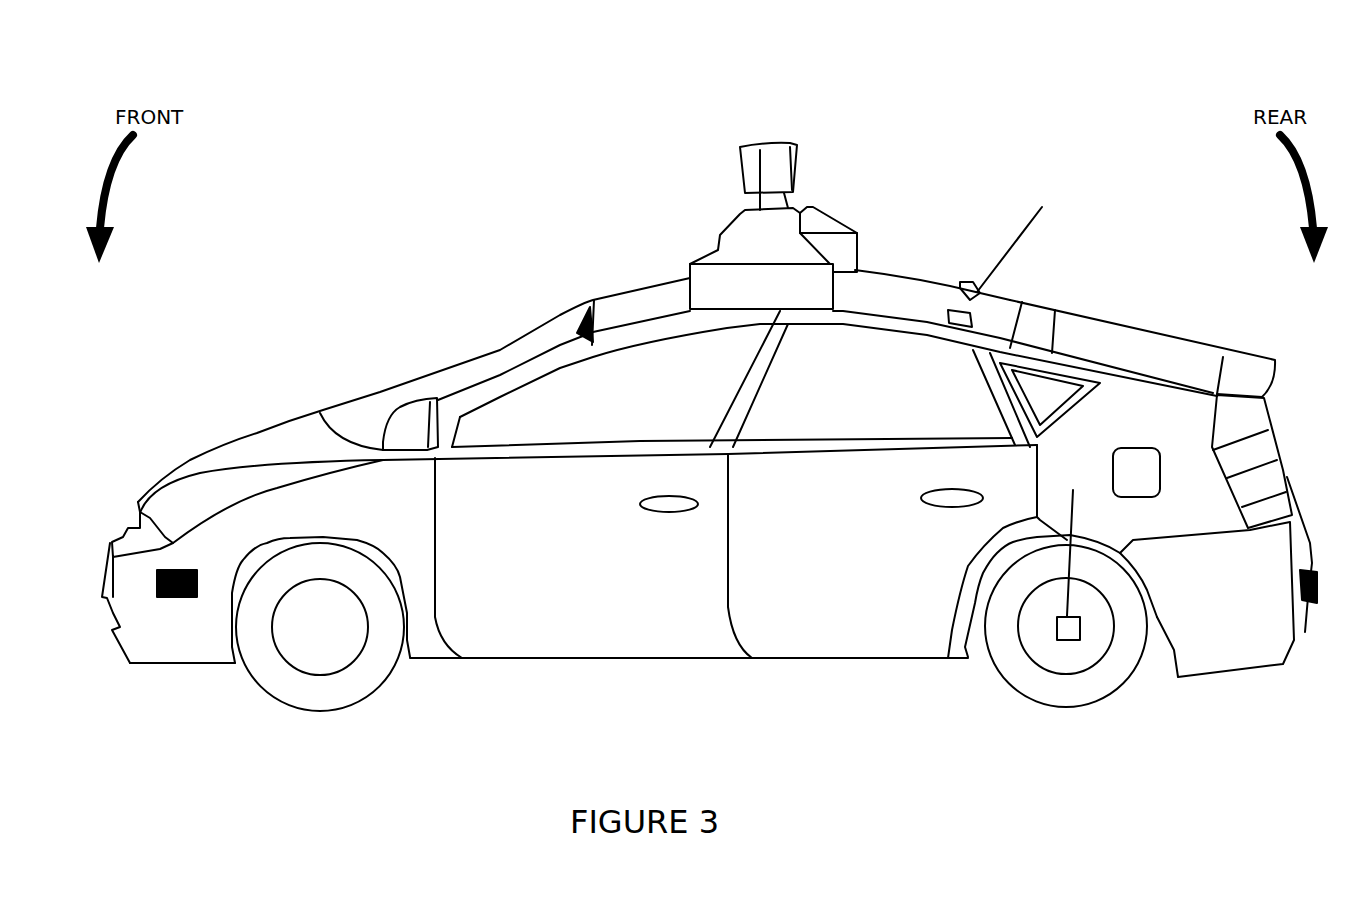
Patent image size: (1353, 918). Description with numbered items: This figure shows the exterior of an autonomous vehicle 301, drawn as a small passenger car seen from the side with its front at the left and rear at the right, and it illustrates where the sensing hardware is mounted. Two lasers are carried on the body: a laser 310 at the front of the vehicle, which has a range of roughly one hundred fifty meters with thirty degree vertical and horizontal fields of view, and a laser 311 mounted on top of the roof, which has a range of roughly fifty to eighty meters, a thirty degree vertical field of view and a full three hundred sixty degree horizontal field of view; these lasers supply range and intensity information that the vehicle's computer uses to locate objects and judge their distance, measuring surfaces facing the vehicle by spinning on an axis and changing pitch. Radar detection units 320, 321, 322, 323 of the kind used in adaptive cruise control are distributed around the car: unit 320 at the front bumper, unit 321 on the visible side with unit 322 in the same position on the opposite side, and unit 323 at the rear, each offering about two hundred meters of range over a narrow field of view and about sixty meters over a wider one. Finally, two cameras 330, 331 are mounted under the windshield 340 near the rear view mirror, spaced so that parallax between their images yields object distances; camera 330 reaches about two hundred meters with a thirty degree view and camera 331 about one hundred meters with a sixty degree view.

The vehicle 301 is at (384, 91).
The laser 310 is at (110, 553).
The laser 311 is at (747, 162).
The radar detection unit 320 is at (112, 617).
The radar detection unit 321 is at (178, 597).
The radar detection unit 322 is at (427, 656).
The radar detection unit 323 is at (1312, 603).
The camera 330 is at (495, 308).
The camera 331 is at (580, 323).
The windshield 340 is at (503, 363).